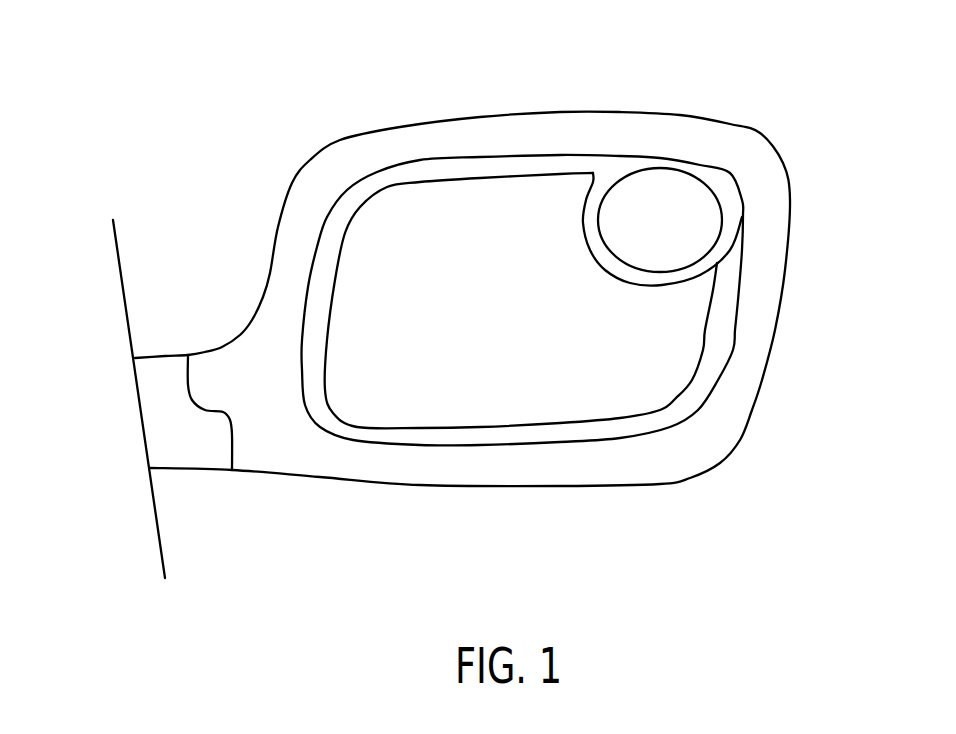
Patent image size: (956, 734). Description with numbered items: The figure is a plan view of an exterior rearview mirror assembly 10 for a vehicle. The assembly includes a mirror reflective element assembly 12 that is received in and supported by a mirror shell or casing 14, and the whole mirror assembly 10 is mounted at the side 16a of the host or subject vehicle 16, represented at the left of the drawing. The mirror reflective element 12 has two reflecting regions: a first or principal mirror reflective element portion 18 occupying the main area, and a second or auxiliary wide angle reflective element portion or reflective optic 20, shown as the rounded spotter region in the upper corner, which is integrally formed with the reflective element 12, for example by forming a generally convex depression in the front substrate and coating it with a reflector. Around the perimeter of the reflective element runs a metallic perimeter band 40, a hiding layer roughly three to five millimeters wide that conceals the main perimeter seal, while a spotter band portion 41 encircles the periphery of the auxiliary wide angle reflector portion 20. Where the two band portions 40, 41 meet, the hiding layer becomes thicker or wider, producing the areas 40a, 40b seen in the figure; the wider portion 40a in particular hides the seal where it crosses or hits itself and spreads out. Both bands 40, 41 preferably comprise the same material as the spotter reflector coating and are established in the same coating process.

The exterior rearview mirror assembly 10 is at (578, 96).
The mirror reflective element assembly 12 is at (442, 400).
The mirror shell or casing 14 is at (605, 477).
The host or subject vehicle 16 is at (95, 405).
The side of vehicle 16a is at (158, 535).
The principal mirror reflective element portion 18 is at (668, 302).
The auxiliary wide angle reflective element portion 20 is at (623, 213).
The metallic perimeter band 40 is at (445, 163).
The wider portion of hiding layer 40a is at (605, 172).
The area where band portions meet 40b is at (725, 253).
The spotter band portion 41 is at (610, 262).